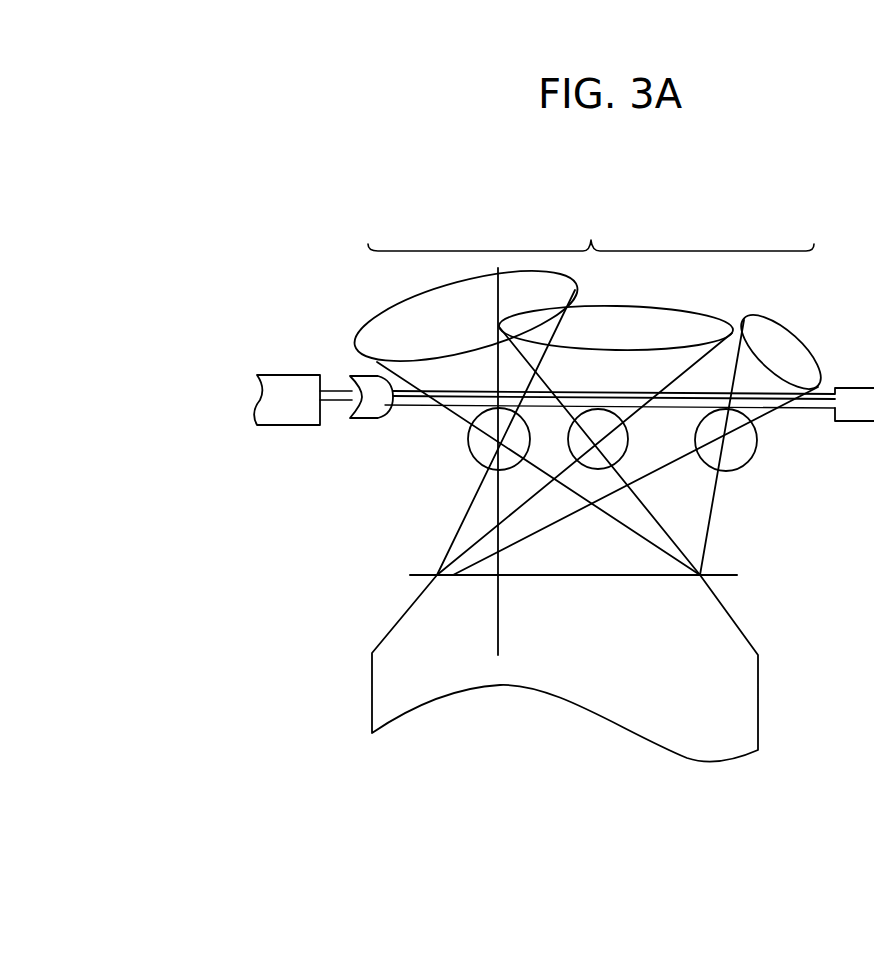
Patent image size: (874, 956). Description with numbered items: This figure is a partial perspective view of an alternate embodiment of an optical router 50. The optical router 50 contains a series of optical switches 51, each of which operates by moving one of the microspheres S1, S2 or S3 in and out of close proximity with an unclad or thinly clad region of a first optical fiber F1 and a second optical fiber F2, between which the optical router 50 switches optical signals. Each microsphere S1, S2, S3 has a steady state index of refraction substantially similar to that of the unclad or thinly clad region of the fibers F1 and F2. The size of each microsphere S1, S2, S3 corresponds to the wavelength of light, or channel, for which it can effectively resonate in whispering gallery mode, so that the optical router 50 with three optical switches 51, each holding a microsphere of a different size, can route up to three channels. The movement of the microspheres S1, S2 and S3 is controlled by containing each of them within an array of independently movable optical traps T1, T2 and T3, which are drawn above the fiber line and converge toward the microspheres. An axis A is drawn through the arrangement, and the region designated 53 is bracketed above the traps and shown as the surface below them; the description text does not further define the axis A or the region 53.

The optical router 50 is at (392, 519).
The optical switches 51 is at (462, 490).
The screen / target surface 53 is at (709, 726).
The optical axis A is at (497, 285).
The first optical fiber F1 is at (368, 420).
The second optical fiber F2 is at (301, 410).
The optical trap T1 is at (781, 352).
The optical trap T2 is at (616, 328).
The optical trap T3 is at (466, 315).
The microsphere S1 is at (749, 454).
The microsphere S2 is at (593, 451).
The microsphere S3 is at (527, 451).